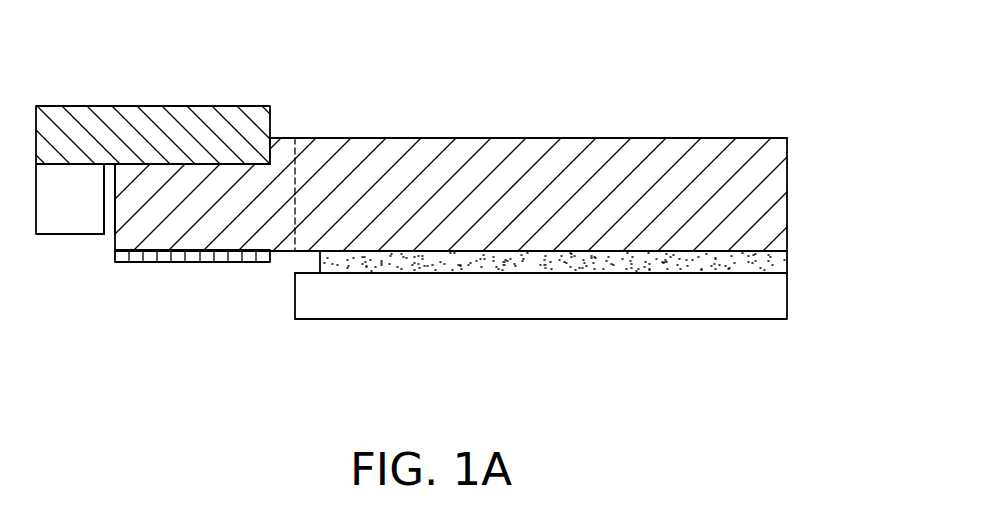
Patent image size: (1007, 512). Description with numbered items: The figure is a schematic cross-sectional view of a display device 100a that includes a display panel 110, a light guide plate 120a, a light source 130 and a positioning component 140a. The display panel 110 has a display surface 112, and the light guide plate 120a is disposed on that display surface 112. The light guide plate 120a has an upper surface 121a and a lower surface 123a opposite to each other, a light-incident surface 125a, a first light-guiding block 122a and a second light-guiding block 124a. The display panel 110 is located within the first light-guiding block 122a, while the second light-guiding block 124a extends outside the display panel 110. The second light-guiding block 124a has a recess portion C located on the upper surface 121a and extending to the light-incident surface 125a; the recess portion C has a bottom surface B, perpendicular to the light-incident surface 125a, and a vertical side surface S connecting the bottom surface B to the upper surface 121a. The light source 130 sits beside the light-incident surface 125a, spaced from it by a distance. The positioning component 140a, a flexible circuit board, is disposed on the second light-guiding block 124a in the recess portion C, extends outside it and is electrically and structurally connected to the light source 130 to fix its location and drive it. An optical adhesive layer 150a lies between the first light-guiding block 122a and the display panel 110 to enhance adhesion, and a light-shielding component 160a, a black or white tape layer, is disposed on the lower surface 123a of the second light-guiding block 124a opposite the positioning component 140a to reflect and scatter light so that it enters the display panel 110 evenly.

The display device 100a is at (750, 350).
The display panel 110 is at (770, 306).
The display surface 112 is at (731, 272).
The light guide plate 120a is at (395, 72).
The upper surface 121a is at (707, 139).
The first light-guiding block 122a is at (385, 155).
The lower surface 123a is at (674, 262).
The second light-guiding block 124a is at (283, 153).
The light-incident surface 125a is at (103, 203).
The light source 130 is at (62, 225).
The positioning component 140a is at (76, 125).
The optical adhesive layer 150a is at (390, 260).
The light-shielding component 160a is at (193, 253).
The recess portion C is at (233, 45).
The bottom surface B is at (195, 163).
The side surface S is at (268, 152).